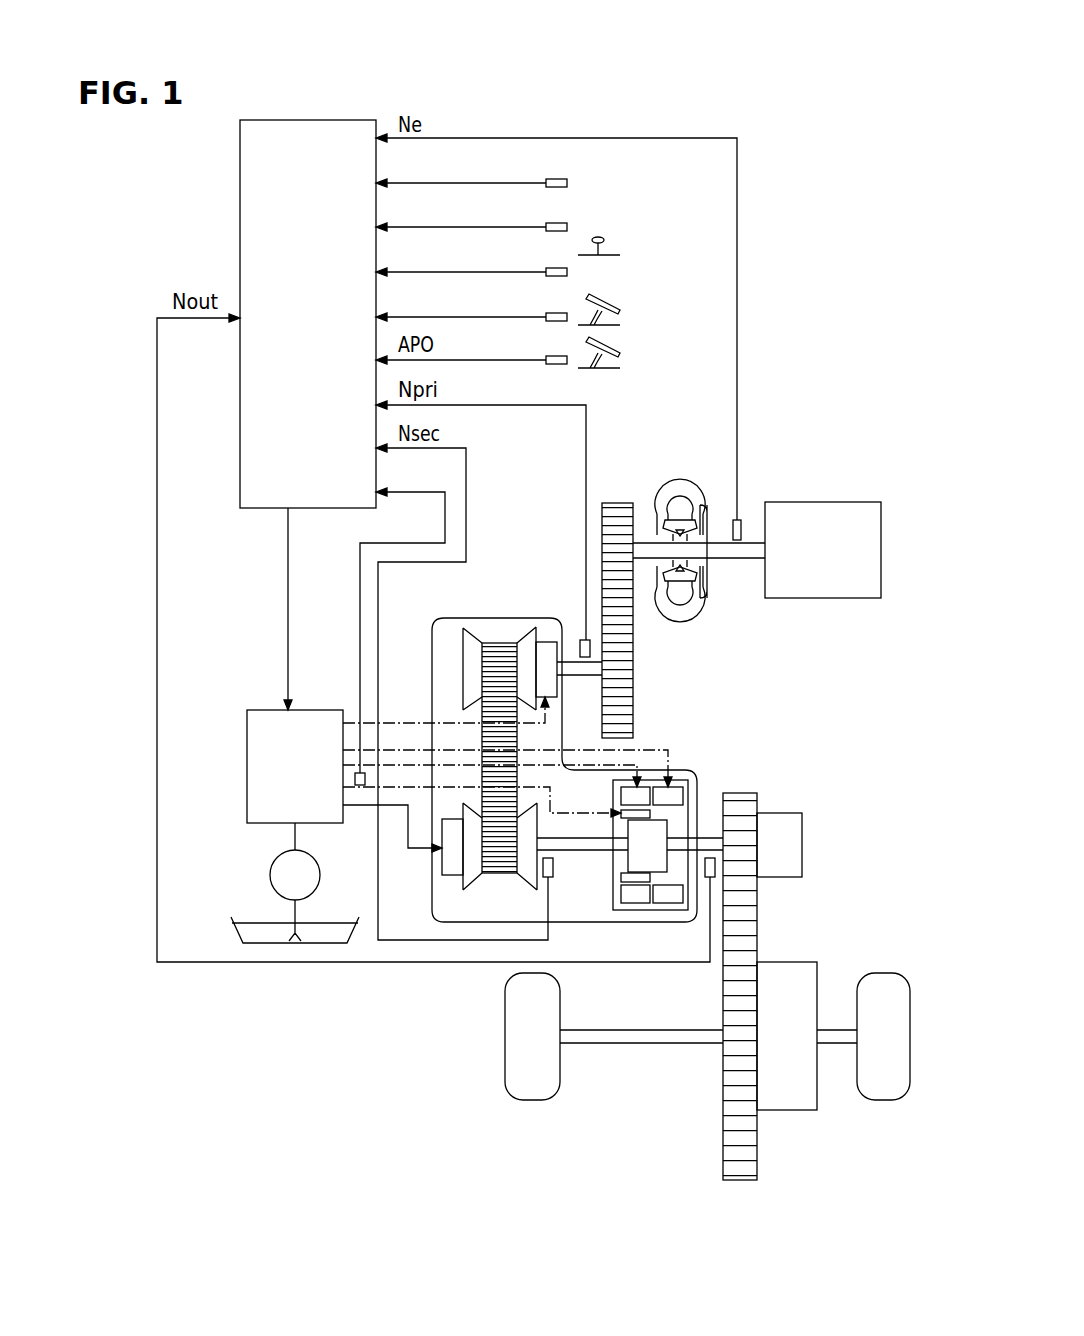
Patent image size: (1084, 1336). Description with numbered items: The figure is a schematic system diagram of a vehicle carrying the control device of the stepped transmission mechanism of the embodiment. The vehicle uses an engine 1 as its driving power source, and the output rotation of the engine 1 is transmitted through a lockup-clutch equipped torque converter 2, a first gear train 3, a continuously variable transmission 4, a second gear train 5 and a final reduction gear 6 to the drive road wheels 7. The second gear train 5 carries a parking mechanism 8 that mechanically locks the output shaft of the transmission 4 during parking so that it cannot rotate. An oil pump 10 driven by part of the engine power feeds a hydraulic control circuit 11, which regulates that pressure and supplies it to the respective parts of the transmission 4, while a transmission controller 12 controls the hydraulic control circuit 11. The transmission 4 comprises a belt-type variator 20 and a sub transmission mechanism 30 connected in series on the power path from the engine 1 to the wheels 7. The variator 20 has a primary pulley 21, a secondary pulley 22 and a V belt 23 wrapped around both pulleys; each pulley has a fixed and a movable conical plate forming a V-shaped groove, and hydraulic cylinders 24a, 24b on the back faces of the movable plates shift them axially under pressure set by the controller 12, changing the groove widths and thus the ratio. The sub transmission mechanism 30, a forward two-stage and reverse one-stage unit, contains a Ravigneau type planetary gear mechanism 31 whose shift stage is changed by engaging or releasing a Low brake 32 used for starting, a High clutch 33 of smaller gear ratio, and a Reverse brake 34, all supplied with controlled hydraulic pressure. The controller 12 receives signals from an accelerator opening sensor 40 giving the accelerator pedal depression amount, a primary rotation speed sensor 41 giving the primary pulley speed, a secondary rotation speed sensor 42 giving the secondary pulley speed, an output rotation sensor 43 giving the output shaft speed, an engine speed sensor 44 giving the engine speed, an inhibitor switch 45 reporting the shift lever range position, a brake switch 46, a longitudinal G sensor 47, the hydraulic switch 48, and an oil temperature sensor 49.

The engine 1 is at (823, 502).
The torque converter 2 is at (688, 480).
The first gear train 3 is at (627, 502).
The continuously variable transmission 4 is at (453, 618).
The second gear train 5 is at (771, 1137).
The final reduction gear 6 is at (778, 962).
The drive road wheels 7 is at (532, 1100).
The parking mechanism 8 is at (802, 845).
The oil pump 10 is at (270, 875).
The hydraulic control circuit 11 is at (255, 710).
The transmission controller 12 is at (240, 182).
The variator 20 is at (494, 739).
The primary pulley 21 is at (462, 650).
The secondary pulley 22 is at (473, 884).
The V belt 23 is at (498, 640).
The hydraulic cylinder 24a is at (548, 625).
The hydraulic cylinder 24b is at (448, 876).
The sub transmission mechanism 30 is at (655, 834).
The Ravigneau type planetary gear mechanism 31 is at (628, 858).
The Low brake 32 is at (619, 793).
The High clutch 33 is at (637, 886).
The Reverse brake 34 is at (688, 795).
The accelerator opening sensor 40 is at (545, 355).
The primary rotation speed sensor 41 is at (581, 640).
The secondary rotation speed sensor 42 is at (553, 870).
The output rotation sensor 43 is at (716, 868).
The engine speed sensor 44 is at (741, 528).
The inhibitor switch 45 is at (545, 267).
The brake switch 46 is at (545, 312).
The longitudinal G sensor 47 is at (545, 222).
The hydraulic switch 48 is at (362, 787).
The oil temperature sensor 49 is at (545, 178).